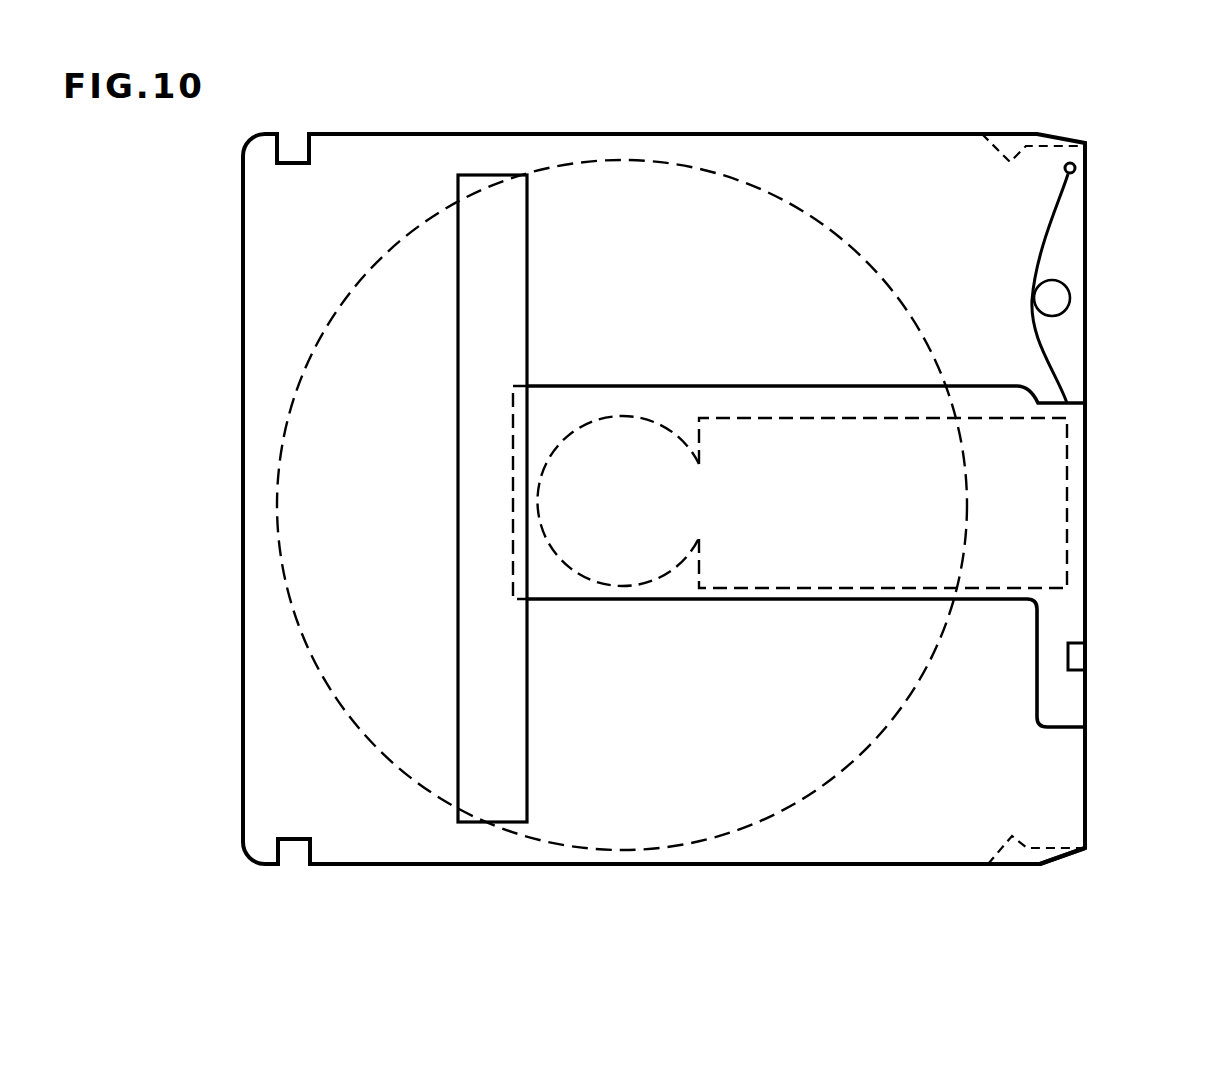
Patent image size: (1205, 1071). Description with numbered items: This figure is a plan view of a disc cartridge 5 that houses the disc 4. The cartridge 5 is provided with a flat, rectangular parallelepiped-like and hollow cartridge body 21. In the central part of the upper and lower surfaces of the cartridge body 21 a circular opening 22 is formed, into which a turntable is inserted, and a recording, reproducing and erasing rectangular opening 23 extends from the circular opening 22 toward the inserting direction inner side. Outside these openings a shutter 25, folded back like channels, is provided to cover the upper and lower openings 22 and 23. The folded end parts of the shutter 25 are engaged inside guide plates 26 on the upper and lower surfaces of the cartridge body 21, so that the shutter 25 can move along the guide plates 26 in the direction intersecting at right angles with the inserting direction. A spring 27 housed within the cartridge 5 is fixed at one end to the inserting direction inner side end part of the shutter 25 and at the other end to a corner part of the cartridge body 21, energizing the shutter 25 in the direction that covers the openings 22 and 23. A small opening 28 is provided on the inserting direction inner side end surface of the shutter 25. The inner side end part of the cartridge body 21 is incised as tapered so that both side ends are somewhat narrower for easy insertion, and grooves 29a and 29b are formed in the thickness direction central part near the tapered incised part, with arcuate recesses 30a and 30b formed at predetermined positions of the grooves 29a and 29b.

The cartridge body 21 is at (399, 133).
The disc 4 is at (650, 160).
The cartridge 5 is at (862, 133).
The circular opening 22 is at (624, 416).
The rectangular opening 23 is at (812, 418).
The shutter 25 is at (1077, 610).
The guide plates 26 is at (474, 822).
The spring 27 is at (1057, 215).
The small opening 28 is at (1085, 657).
The groove 29a is at (1060, 150).
The groove 29b is at (1050, 853).
The arcuate recess 30a is at (1020, 143).
The arcuate recess 30b is at (1008, 843).